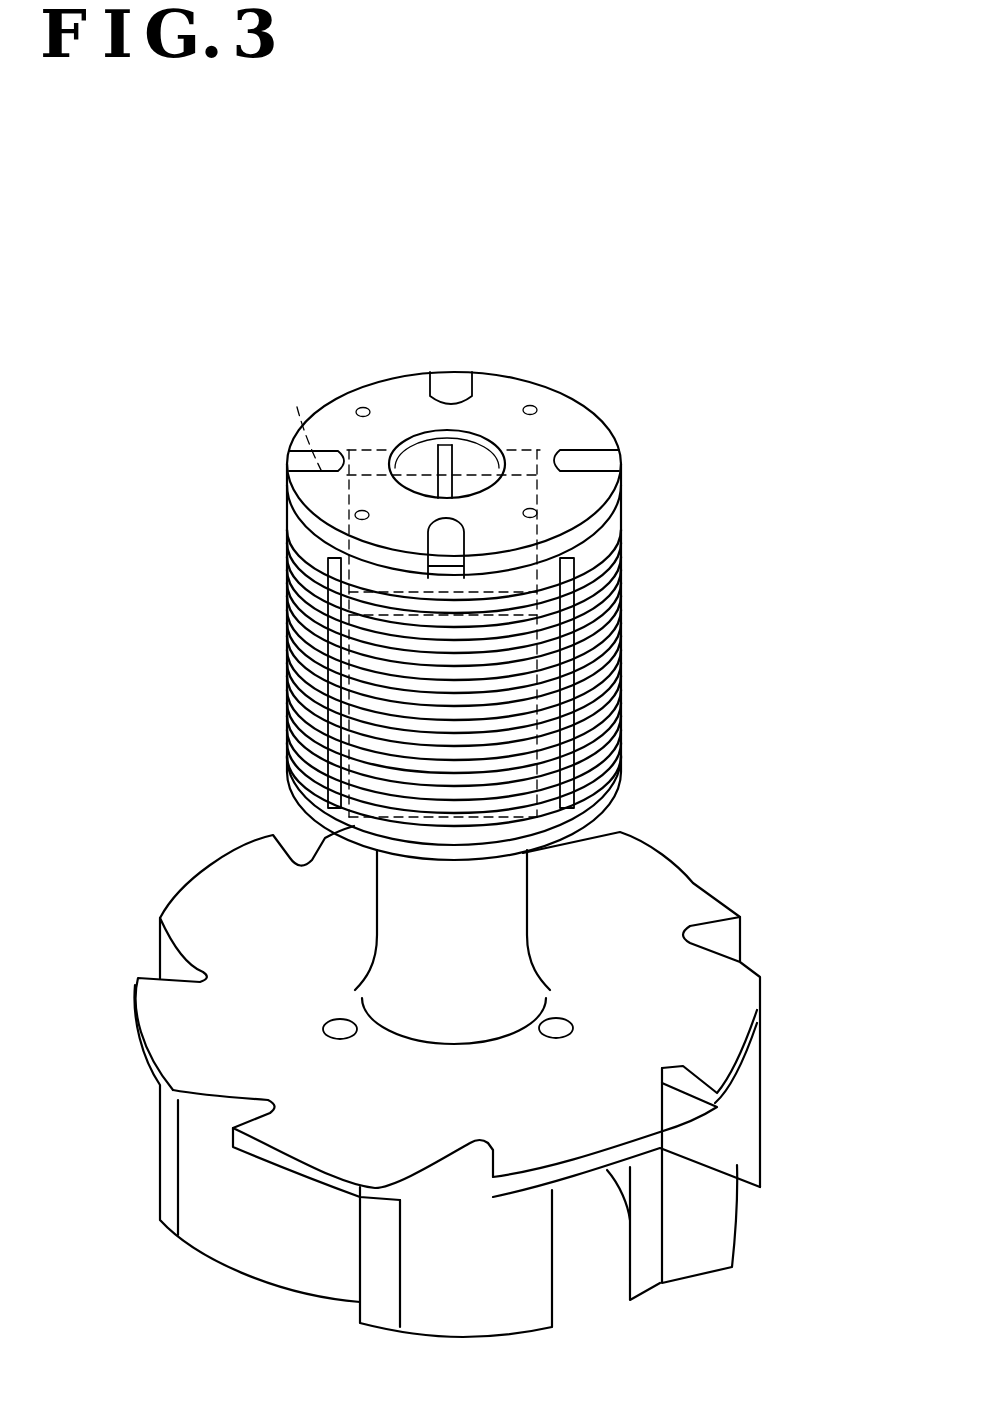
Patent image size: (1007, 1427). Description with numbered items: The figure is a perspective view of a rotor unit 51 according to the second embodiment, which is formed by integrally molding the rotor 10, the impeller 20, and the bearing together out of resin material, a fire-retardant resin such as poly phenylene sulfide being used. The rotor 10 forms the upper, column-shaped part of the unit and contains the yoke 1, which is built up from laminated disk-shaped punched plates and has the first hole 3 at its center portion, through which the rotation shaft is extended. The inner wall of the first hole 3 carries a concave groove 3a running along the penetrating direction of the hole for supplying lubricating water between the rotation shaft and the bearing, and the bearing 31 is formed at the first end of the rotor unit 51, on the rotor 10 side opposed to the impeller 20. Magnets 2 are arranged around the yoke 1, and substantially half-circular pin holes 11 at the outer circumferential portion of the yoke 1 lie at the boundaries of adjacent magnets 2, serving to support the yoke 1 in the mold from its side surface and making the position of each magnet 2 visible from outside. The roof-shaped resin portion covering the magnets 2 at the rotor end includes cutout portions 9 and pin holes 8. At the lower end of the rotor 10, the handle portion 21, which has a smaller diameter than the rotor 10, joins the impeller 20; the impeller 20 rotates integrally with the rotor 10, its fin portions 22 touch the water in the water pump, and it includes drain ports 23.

The rotor unit 51 is at (212, 328).
The rotor 10 is at (678, 593).
The yoke 1 is at (282, 704).
The pin hole 11 is at (287, 776).
The magnet 2 is at (348, 450).
The first hole 3 is at (417, 428).
The concave groove 3a is at (448, 440).
The bearing 31 is at (456, 442).
The cutout portion 9 is at (443, 390).
The pin hole 8 is at (363, 408).
The impeller 20 is at (138, 890).
The handle portion 21 is at (525, 888).
The fin portion 22 is at (272, 1257).
The drain port 23 is at (339, 1018).